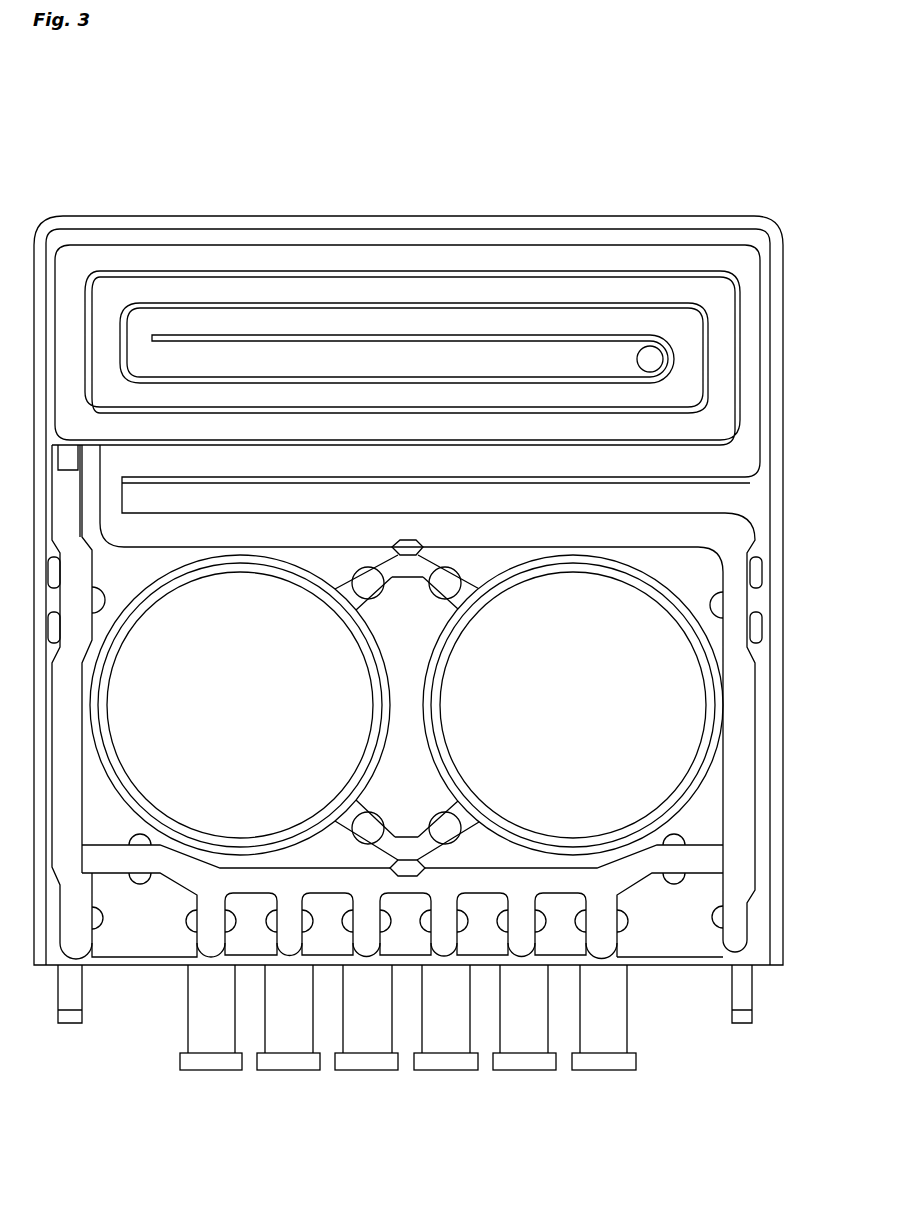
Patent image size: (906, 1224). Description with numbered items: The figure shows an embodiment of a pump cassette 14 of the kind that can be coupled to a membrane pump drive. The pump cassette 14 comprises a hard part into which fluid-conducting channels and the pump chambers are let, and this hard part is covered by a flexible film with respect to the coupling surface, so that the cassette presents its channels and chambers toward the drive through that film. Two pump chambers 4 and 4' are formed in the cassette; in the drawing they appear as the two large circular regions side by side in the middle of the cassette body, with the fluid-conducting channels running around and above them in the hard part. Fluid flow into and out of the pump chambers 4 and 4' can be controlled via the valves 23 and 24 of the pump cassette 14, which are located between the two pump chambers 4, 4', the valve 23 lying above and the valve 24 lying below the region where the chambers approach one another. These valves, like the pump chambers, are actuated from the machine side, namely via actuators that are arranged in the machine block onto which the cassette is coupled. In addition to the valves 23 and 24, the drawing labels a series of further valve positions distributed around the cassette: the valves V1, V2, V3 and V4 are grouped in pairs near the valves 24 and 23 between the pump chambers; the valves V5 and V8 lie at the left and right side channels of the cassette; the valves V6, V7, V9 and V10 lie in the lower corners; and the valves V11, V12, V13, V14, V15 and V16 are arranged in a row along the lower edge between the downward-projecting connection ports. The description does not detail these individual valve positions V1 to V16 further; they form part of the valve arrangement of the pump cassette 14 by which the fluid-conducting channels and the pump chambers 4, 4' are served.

The pump cassette 14 is at (414, 166).
The pump chamber 4 is at (573, 705).
The pump chamber 4' is at (240, 705).
The valve 23 is at (407, 598).
The valve 24 is at (407, 821).
The valve V1 is at (368, 827).
The valve V2 is at (368, 582).
The valve V3 is at (447, 826).
The valve V4 is at (448, 583).
The valve V5 is at (76, 600).
The valve V6 is at (81, 919).
The valve V7 is at (140, 859).
The valve V8 is at (736, 600).
The valve V9 is at (674, 859).
The valve V10 is at (727, 920).
The valve V11 is at (211, 932).
The valve V12 is at (289, 931).
The valve V13 is at (366, 932).
The valve V14 is at (444, 931).
The valve V15 is at (521, 932).
The valve V16 is at (601, 932).